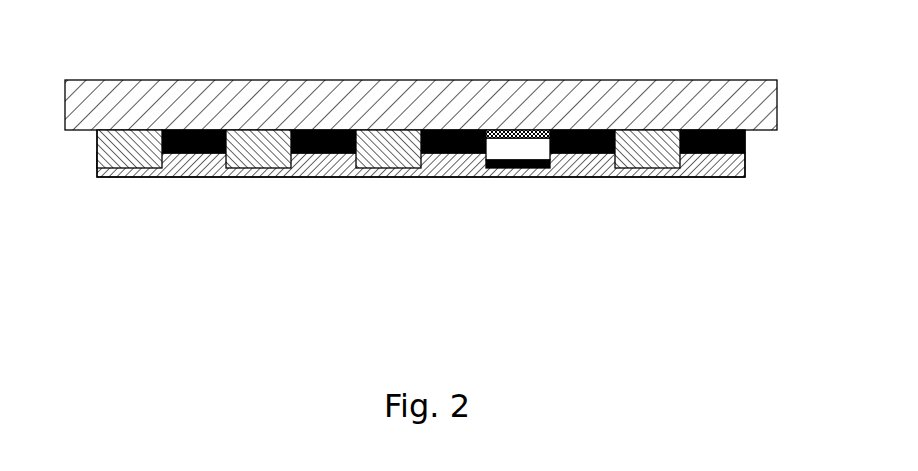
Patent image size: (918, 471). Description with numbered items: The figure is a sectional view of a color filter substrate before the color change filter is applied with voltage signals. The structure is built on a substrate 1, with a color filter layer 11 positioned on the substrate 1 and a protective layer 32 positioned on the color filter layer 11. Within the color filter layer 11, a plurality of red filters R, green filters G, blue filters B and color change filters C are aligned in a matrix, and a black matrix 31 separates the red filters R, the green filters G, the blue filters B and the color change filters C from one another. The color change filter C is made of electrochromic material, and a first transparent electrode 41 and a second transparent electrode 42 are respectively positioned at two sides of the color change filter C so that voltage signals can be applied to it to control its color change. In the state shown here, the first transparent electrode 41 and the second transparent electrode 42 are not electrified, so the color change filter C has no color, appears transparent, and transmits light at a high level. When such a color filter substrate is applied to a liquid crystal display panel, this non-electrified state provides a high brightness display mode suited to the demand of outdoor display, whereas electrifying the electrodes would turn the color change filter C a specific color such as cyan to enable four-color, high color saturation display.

The substrate 1 is at (695, 93).
The color filter layer 11 is at (336, 160).
The black matrix 31 is at (320, 130).
The protective layer 32 is at (718, 160).
The first transparent electrode 41 is at (535, 130).
The second transparent electrode 42 is at (542, 166).
The red filter R is at (140, 150).
The green filter G is at (268, 150).
The blue filter B is at (387, 150).
The color change filter C is at (531, 130).